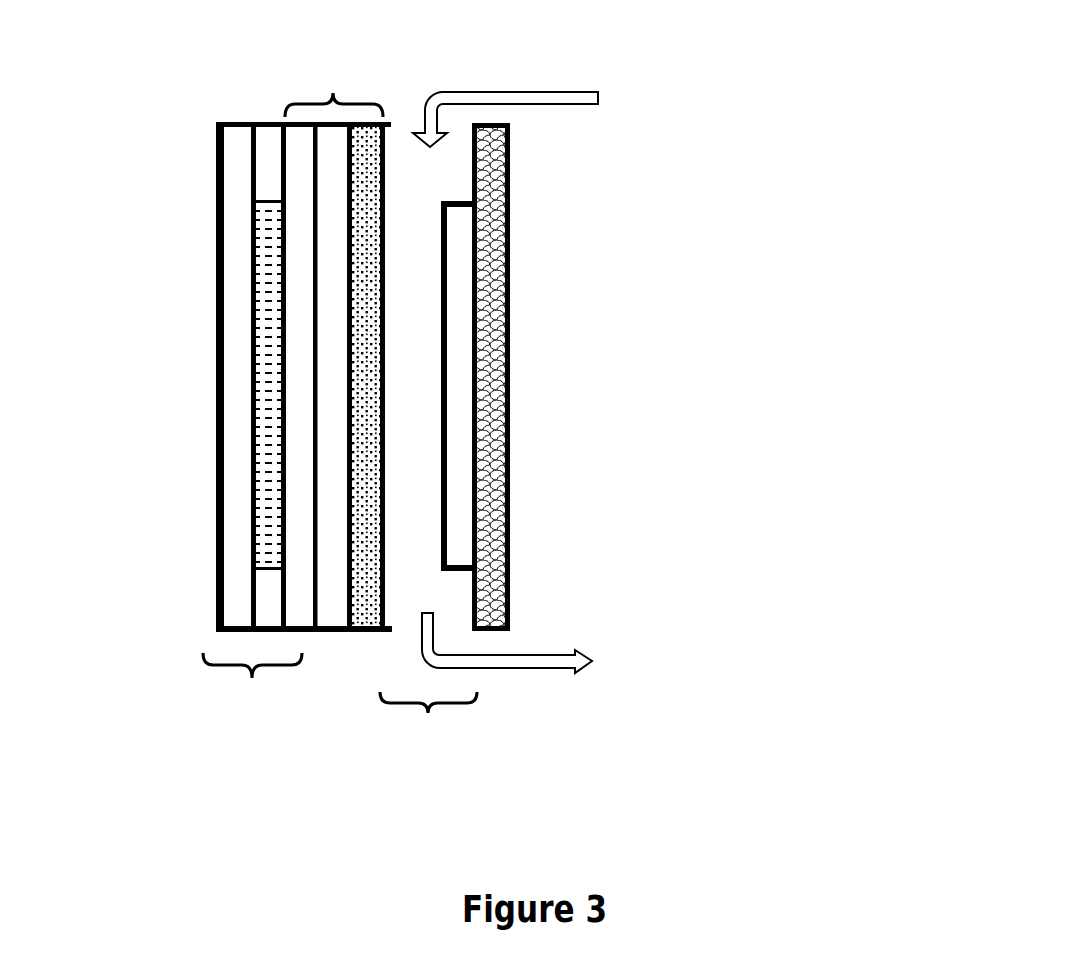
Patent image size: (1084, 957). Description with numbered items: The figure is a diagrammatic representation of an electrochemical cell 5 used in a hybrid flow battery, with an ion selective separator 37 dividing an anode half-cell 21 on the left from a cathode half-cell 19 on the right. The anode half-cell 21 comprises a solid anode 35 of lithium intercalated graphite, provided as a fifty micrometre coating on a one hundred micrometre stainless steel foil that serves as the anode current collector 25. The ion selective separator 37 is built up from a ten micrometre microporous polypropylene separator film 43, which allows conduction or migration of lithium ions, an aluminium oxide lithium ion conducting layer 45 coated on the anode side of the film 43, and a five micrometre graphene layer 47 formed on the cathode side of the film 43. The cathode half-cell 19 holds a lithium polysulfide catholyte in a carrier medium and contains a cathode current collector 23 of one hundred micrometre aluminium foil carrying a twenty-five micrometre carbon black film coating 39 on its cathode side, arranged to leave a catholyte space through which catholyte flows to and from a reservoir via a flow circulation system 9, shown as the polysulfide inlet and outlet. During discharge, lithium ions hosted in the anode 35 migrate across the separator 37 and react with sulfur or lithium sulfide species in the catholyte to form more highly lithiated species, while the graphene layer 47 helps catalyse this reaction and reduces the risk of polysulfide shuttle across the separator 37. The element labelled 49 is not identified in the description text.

The electrochemical cell 5 is at (183, 110).
The flow circulation system 9 is at (531, 73).
The cathode half-cell 19 is at (428, 730).
The anode half-cell 21 is at (252, 695).
The cathode current collector 23 is at (500, 344).
The anode current collector 25 is at (228, 178).
The solid anode 35 is at (249, 278).
The ion selective separator 37 is at (334, 71).
The carbon black film coating 39 is at (465, 247).
The microporous polypropylene separator film 43 is at (318, 483).
The aluminium oxide lithium ion conducting layer 45 is at (292, 381).
The graphene layer 47 is at (344, 591).
The current collector 49 is at (523, 444).